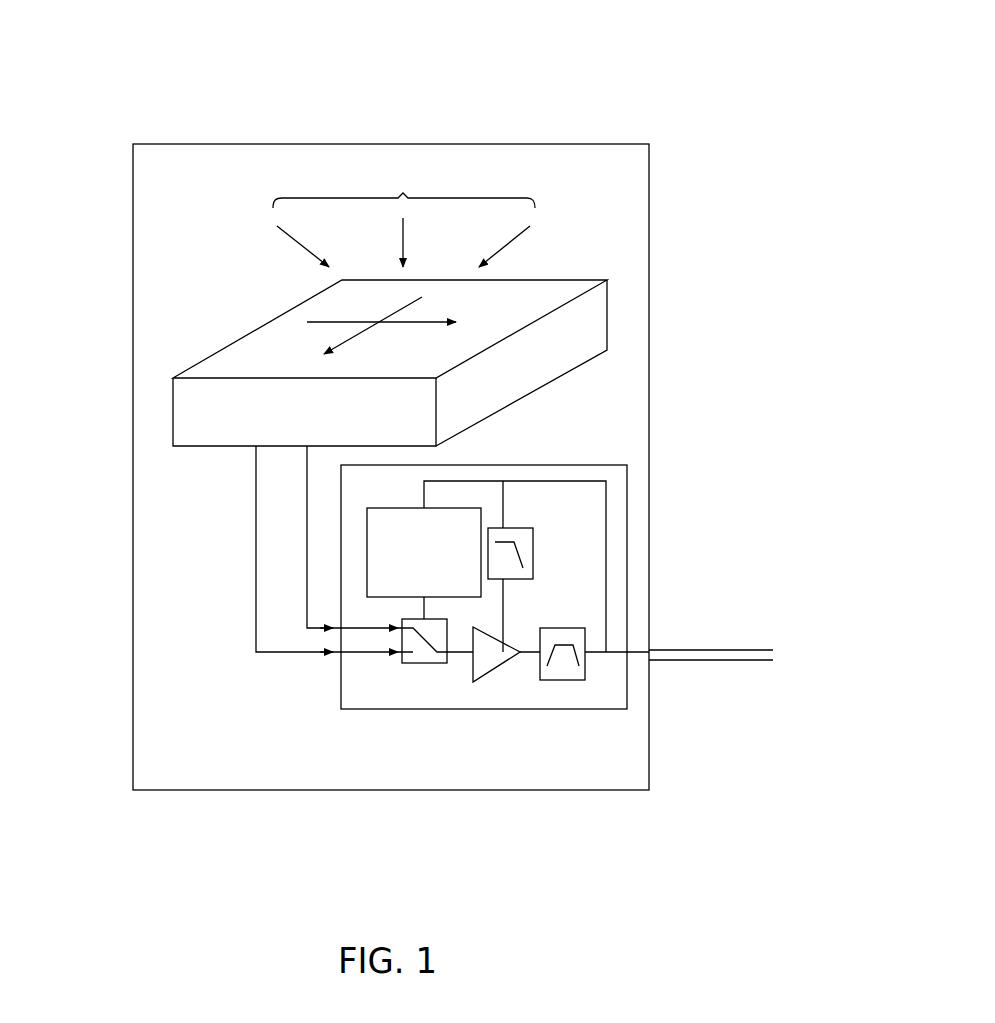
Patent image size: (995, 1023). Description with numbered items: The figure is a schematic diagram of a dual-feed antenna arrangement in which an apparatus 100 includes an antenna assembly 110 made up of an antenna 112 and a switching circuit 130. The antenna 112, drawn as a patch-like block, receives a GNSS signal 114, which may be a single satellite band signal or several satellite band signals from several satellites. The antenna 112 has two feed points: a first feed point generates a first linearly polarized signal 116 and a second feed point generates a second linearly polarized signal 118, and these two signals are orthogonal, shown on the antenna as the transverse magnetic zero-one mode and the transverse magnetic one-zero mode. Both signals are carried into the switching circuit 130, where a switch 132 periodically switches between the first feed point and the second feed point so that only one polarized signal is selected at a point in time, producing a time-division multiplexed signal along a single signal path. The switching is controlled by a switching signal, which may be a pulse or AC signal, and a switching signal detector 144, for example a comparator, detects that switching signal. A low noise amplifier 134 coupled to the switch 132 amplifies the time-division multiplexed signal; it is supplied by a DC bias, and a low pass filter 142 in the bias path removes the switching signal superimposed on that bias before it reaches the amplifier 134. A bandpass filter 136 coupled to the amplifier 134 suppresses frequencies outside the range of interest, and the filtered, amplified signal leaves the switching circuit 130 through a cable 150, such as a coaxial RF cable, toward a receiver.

The apparatus 100 is at (115, 60).
The antenna assembly 110 is at (565, 144).
The antenna 112 is at (611, 318).
The GNSS signal 114 is at (404, 214).
The first linearly polarized signal 116 is at (256, 515).
The second linearly polarized signal 118 is at (307, 478).
The switching circuit 130 is at (413, 650).
The switch 132 is at (418, 664).
The low noise amplifier 134 is at (493, 682).
The bandpass filter 136 is at (558, 681).
The low pass filter 142 is at (516, 528).
The switching signal detector 144 is at (367, 560).
The cable 150 is at (724, 661).